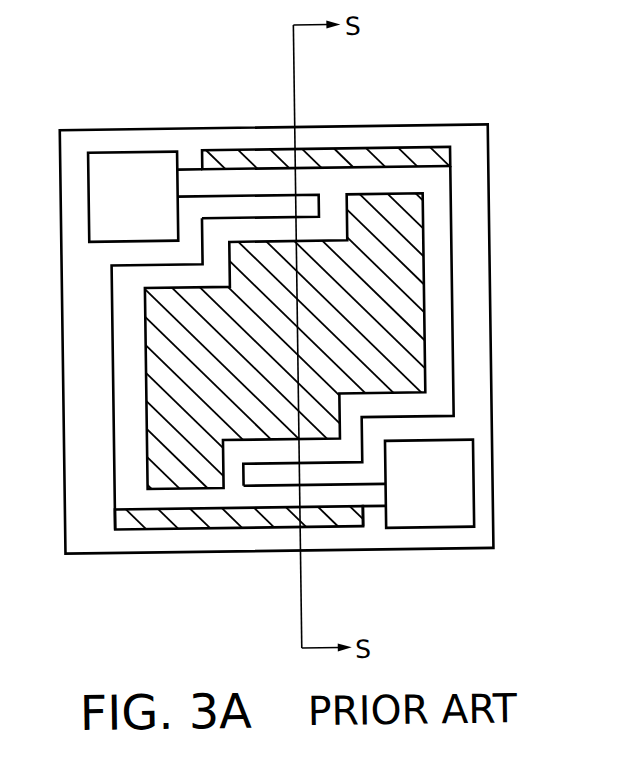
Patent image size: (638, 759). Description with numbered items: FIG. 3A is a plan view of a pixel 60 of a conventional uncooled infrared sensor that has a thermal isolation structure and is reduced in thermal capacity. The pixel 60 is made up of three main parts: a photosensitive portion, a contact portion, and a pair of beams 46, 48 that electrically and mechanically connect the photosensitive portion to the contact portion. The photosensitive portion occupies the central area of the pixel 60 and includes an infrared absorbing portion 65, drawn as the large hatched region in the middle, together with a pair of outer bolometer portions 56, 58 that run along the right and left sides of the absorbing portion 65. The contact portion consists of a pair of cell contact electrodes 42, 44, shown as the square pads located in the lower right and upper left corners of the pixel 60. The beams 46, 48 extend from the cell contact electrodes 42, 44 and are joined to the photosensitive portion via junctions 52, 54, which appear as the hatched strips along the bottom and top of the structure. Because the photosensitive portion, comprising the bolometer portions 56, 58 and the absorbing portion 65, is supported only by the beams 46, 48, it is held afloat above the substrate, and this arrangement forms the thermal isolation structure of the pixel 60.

The pixel 60 is at (463, 111).
The cell contact electrode 42 is at (435, 518).
The cell contact electrode 44 is at (120, 167).
The beam 46 is at (330, 502).
The beam 48 is at (216, 185).
The junction 52 is at (228, 500).
The junction 54 is at (332, 186).
The outer bolometer portion 56 is at (436, 316).
The outer bolometer portion 58 is at (119, 465).
The infrared absorbing portion 65 is at (417, 244).